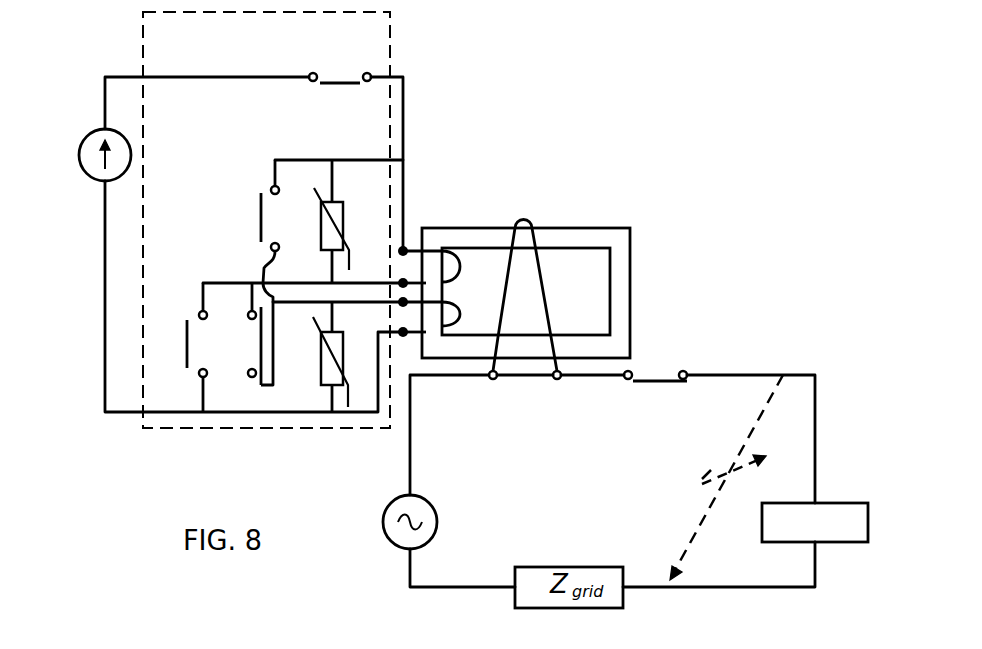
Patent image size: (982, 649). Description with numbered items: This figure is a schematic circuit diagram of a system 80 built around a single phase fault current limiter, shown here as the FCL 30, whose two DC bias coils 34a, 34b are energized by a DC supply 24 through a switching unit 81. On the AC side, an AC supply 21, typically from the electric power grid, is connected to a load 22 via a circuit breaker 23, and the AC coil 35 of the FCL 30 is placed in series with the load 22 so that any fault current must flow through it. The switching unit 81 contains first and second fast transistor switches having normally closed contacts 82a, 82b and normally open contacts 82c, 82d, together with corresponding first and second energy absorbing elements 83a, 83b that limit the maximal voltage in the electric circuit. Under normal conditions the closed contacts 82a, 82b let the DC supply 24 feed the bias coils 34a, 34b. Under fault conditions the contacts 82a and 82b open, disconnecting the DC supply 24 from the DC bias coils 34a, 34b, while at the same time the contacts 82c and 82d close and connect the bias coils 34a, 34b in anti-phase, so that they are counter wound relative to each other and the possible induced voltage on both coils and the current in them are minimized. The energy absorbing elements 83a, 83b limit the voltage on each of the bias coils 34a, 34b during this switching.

The system 80 is at (596, 148).
The switching unit 81 is at (143, 17).
The DC power supply 24 is at (80, 155).
The normally closed contact 82a is at (333, 85).
The normally closed contact 82b is at (253, 348).
The normally open contact 82c is at (260, 218).
The normally open contact 82d is at (187, 340).
The energy absorbing element 83a is at (322, 352).
The energy absorbing element 83b is at (318, 212).
The single phase FCL 30 is at (599, 222).
The DC bias coil 34a is at (412, 242).
The DC bias coil 34b is at (410, 335).
The AC coil 35 is at (523, 167).
The circuit breaker 23 is at (650, 382).
The load 22 is at (837, 503).
The AC supply 21 is at (437, 515).